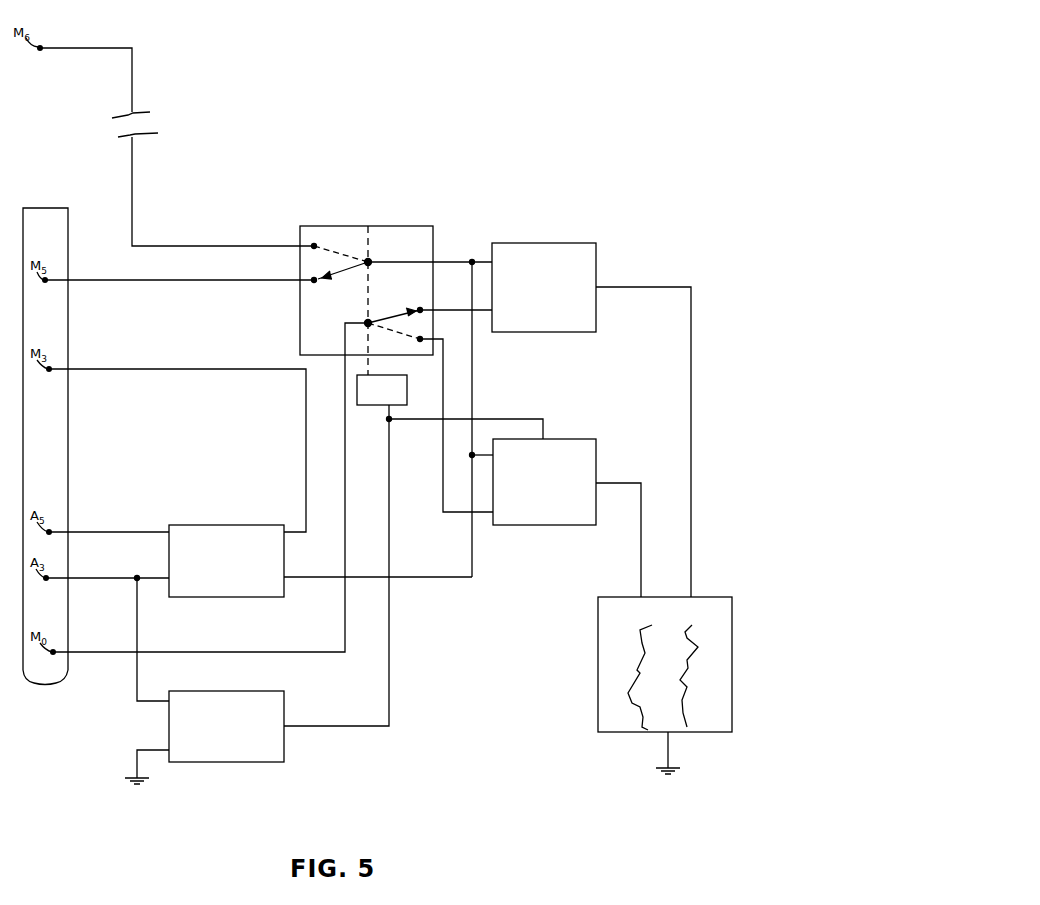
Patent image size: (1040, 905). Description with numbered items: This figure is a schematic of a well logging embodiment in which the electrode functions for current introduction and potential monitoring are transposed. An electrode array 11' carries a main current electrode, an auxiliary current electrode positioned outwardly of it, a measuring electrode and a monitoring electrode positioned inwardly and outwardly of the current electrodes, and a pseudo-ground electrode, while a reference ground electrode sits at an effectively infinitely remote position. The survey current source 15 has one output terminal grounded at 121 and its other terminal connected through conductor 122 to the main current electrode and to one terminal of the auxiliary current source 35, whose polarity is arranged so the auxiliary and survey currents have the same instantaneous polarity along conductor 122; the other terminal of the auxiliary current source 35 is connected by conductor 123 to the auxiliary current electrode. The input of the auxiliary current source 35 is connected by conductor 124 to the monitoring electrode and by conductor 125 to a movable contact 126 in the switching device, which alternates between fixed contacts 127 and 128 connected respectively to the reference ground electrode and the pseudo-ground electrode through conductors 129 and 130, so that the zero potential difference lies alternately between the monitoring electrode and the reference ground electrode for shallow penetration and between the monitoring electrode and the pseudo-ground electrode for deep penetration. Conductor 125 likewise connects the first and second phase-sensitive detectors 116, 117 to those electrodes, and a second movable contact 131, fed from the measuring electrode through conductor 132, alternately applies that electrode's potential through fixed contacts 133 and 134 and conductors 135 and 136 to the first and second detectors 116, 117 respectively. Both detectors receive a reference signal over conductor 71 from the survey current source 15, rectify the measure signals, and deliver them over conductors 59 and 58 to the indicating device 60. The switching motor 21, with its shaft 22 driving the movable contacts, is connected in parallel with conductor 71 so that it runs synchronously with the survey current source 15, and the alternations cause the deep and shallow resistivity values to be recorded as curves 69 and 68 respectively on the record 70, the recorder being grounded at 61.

The electrode array 11' is at (65, 446).
The conductor 129 is at (133, 200).
The conductor 130 is at (133, 280).
The motor shaft 22 is at (366, 240).
The fixed contact 127 is at (312, 244).
The fixed contact 128 is at (315, 283).
The movable contact 126 is at (334, 276).
The movable contact 131 is at (403, 311).
The fixed contact 134 is at (423, 308).
The fixed contact 133 is at (418, 339).
The conductor 136 is at (478, 311).
The switching motor 21 is at (375, 406).
The conductor 135 is at (442, 440).
The second phase-sensitive detector 117 is at (555, 243).
The first phase-sensitive detector 116 is at (597, 472).
The conductor 59 is at (641, 530).
The conductor 58 is at (692, 525).
The conductor 124 is at (304, 425).
The conductor 123 is at (138, 531).
The auxiliary current source 35 is at (208, 525).
The conductor 122 is at (138, 598).
The conductor 125 is at (412, 580).
The conductor 132 is at (343, 512).
The survey current source 15 is at (288, 716).
The conductor 71 is at (392, 652).
The ground 121 is at (145, 783).
The indicating device 60 is at (598, 637).
The curve 69 is at (638, 670).
The curve 68 is at (688, 678).
The record 70 is at (625, 723).
The ground connection 61 is at (682, 764).